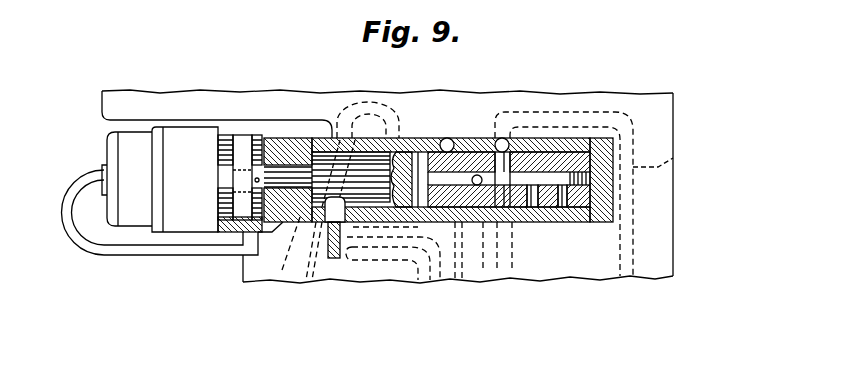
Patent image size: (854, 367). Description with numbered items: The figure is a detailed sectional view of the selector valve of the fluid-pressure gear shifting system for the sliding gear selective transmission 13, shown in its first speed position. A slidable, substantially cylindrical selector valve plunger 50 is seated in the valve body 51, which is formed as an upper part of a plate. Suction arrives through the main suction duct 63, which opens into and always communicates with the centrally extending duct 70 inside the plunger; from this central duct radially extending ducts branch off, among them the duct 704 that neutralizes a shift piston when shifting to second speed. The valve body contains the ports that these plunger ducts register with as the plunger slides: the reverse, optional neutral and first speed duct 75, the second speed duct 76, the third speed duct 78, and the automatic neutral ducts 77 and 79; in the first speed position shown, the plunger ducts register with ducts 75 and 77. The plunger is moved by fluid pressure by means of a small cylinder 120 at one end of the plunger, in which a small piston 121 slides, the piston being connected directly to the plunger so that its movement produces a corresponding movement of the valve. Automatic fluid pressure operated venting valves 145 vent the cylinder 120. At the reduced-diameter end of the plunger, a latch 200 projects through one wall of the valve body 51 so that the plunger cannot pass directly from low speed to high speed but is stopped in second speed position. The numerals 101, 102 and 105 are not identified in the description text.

The sliding gear selective transmission 13 is at (675, 112).
The venting valves 145 is at (128, 146).
The cylinder 120 is at (183, 137).
The piston 121 is at (240, 148).
The piston cup 105 is at (419, 158).
The piston body 101 is at (501, 150).
The centrally extending duct 70 is at (518, 166).
The selector valve plunger 50 is at (560, 157).
The duct 704 is at (533, 198).
The valve body 51 is at (543, 140).
The reverse, optional neutral and first speed duct 75 is at (673, 158).
The port passage 102 is at (418, 140).
The latch 200 is at (322, 223).
The third speed duct 78 is at (405, 260).
The main suction duct 63 is at (458, 270).
The automatic neutral duct 79 is at (512, 263).
The automatic neutral duct 77 is at (322, 272).
The second speed duct 76 is at (306, 258).